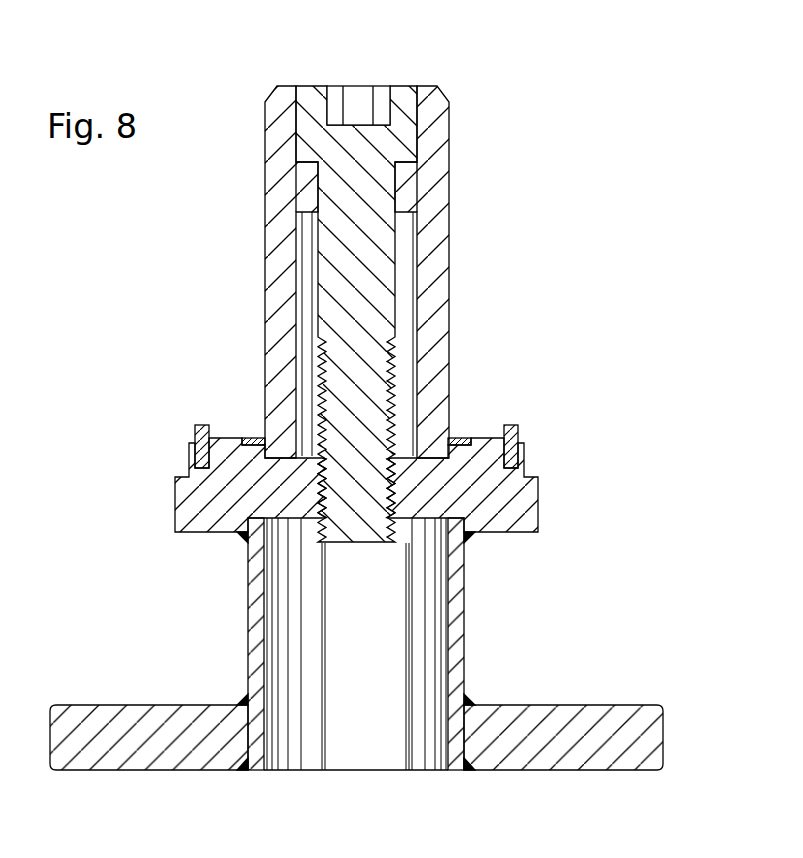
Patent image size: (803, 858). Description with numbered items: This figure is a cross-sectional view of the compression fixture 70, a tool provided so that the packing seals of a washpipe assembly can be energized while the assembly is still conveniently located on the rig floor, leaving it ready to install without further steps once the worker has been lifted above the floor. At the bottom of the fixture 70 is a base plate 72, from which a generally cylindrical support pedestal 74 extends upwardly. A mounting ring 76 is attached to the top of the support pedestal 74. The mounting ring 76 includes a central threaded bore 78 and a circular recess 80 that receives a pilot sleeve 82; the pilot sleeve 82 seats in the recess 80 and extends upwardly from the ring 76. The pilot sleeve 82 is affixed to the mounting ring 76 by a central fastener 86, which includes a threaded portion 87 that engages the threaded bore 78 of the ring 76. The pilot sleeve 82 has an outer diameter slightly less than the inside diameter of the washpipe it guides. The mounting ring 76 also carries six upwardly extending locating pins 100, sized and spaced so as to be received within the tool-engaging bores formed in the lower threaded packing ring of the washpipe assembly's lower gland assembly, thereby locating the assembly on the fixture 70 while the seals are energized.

The compression fixture 70 is at (638, 385).
The base plate 72 is at (560, 715).
The support pedestal 74 is at (457, 620).
The mounting ring 76 is at (527, 496).
The central threaded bore 78 is at (450, 440).
The circular recess 80 is at (267, 476).
The pilot sleeve 82 is at (438, 260).
The central fastener 86 is at (397, 112).
The threaded portion 87 is at (398, 368).
The locating pins 100 is at (193, 426).